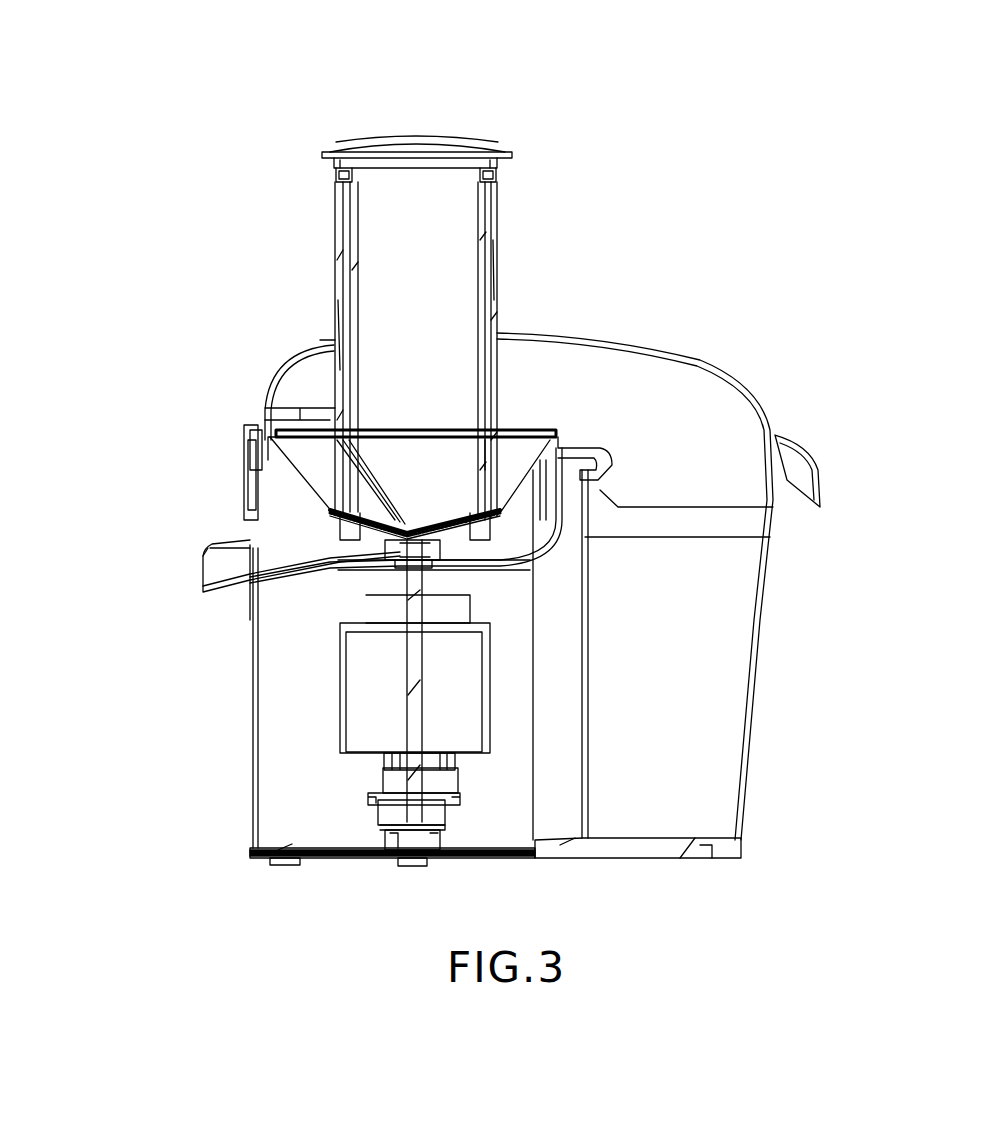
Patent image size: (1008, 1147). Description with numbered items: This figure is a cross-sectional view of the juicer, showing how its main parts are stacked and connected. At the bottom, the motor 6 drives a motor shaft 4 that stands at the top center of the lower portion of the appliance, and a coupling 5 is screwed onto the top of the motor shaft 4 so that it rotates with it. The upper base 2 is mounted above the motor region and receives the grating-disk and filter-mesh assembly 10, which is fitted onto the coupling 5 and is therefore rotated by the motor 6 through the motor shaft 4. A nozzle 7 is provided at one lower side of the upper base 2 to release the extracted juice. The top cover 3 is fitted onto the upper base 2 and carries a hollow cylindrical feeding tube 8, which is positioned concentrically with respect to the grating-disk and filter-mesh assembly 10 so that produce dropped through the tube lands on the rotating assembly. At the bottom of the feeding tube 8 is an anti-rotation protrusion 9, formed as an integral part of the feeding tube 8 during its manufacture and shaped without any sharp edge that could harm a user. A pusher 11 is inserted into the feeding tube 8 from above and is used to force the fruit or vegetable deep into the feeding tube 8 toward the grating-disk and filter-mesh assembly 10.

The upper base 2 is at (258, 418).
The top cover 3 is at (298, 363).
The motor shaft 4 is at (265, 572).
The coupling 5 is at (478, 522).
The motor 6 is at (383, 730).
The nozzle 7 is at (209, 552).
The feeding tube 8 is at (490, 318).
The anti-rotation protrusion 9 is at (370, 490).
The grating-disk and filter-mesh assembly 10 is at (520, 456).
The pusher 11 is at (335, 150).